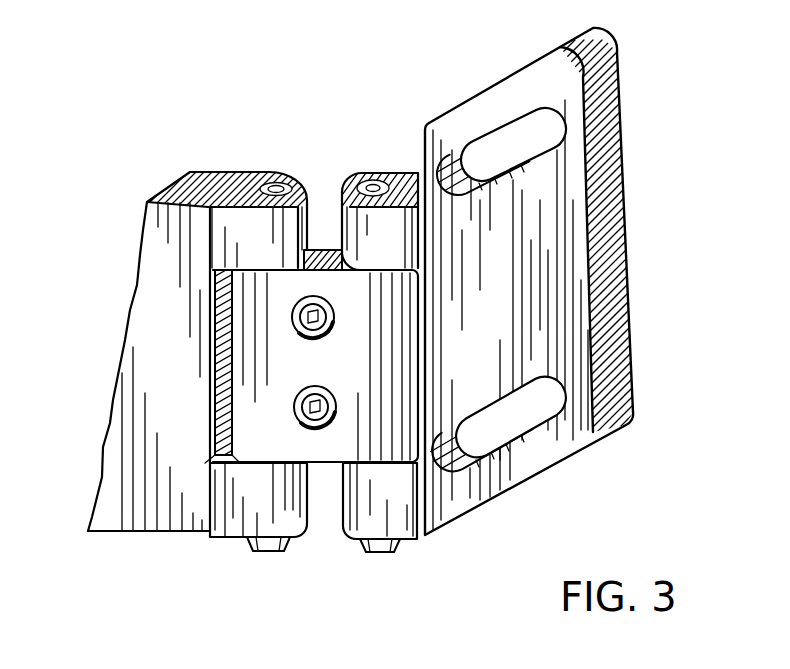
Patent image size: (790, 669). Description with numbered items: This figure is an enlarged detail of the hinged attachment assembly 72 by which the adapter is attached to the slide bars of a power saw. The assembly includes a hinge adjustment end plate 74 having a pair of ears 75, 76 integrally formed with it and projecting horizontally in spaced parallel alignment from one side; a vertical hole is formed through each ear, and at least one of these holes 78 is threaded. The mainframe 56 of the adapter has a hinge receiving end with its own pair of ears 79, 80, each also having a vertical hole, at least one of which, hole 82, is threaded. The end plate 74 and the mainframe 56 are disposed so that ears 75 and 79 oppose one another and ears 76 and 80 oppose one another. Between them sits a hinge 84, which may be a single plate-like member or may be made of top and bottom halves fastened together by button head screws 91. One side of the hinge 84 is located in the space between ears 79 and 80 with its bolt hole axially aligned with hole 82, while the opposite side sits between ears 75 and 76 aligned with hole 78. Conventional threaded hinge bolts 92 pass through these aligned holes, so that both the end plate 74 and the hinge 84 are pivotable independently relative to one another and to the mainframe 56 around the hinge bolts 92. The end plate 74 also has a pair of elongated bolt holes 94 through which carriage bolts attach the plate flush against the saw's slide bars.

The mainframe 56 is at (153, 355).
The hinged attachment assembly 72 is at (325, 173).
The hinge adjustment end plate 74 is at (573, 267).
The ear 75 is at (383, 356).
The ear 76 is at (357, 530).
The threaded hole 78 is at (379, 180).
The ear 79 is at (233, 190).
The ear 80 is at (223, 537).
The threaded hole 82 is at (283, 190).
The hinge 84 is at (327, 450).
The button head screws 91 is at (305, 387).
The hinge bolts 92 is at (263, 550).
The elongated bolt holes 94 is at (503, 152).